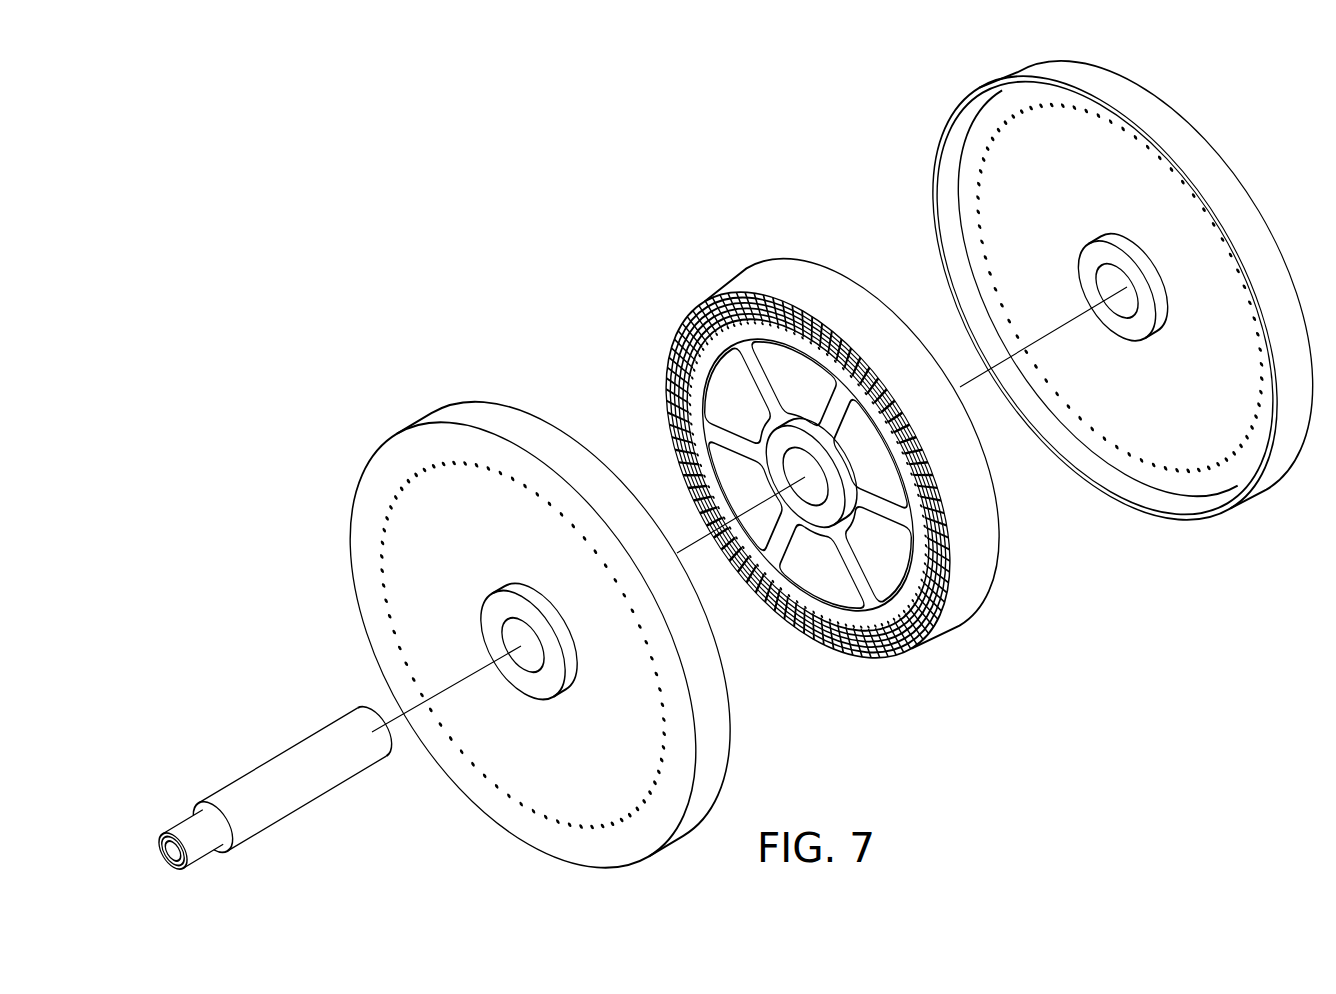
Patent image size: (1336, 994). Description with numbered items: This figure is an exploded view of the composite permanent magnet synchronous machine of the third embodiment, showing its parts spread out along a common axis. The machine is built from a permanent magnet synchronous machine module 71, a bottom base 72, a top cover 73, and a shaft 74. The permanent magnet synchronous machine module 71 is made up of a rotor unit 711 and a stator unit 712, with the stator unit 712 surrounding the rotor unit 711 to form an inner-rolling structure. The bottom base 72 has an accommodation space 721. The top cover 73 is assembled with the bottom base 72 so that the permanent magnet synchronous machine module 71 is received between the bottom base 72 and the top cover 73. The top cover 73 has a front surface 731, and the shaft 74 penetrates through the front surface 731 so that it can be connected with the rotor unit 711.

The permanent magnet synchronous machine module 71 is at (828, 460).
The rotor unit 711 is at (697, 315).
The stator unit 712 is at (670, 377).
The bottom base 72 is at (1099, 290).
The accommodation space 721 is at (1013, 213).
The top cover 73 is at (540, 629).
The front surface 731 is at (398, 462).
The shaft 74 is at (347, 752).